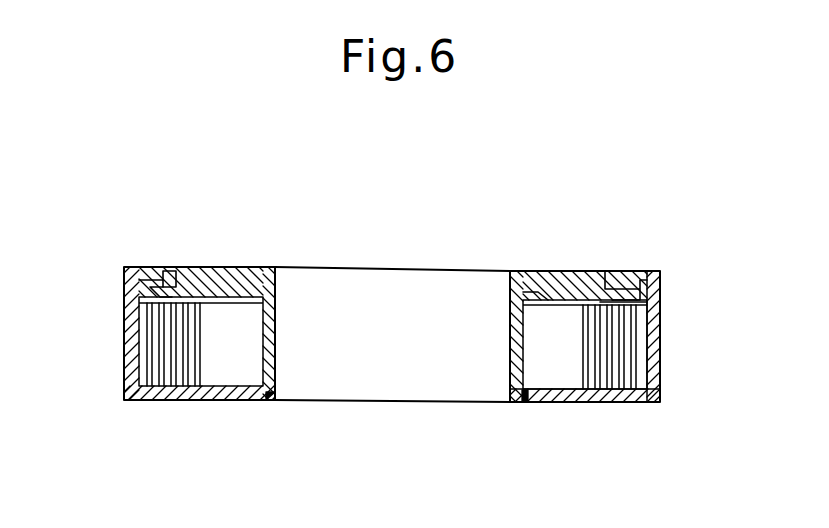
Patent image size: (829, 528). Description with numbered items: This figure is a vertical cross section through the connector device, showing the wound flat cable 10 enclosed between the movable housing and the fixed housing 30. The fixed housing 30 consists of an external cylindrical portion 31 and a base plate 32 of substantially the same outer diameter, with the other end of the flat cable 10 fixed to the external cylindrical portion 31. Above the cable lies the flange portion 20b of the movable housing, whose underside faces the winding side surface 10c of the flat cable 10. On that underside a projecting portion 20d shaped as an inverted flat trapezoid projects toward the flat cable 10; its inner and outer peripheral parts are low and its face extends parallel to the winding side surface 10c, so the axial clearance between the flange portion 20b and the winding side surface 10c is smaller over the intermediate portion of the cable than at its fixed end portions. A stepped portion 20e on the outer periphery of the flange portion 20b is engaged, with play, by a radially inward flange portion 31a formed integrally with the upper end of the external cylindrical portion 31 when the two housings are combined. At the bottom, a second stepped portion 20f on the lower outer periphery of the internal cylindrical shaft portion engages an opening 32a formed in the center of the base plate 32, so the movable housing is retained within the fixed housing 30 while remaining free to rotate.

The flat cable 10 is at (172, 357).
The winding side surface 10c is at (603, 301).
The flange portion 20b is at (550, 280).
The projecting portion 20d is at (140, 293).
The stepped portion 20e is at (155, 270).
The stepped portion 20f is at (525, 400).
The fixed housing 30 is at (742, 330).
The external cylindrical portion 31 is at (658, 348).
The flange portion 31a is at (630, 277).
The base plate 32 is at (658, 396).
The opening 32a is at (278, 398).